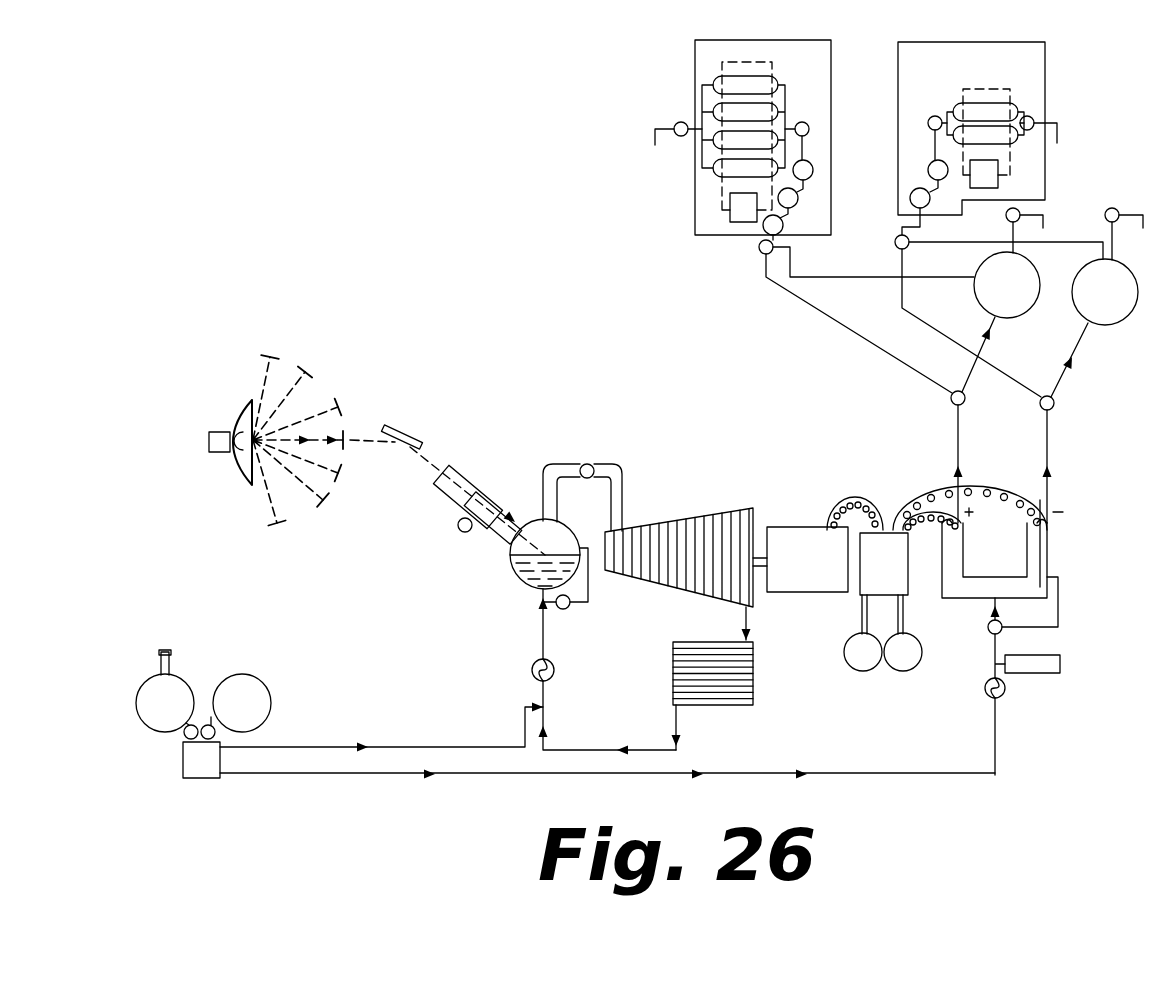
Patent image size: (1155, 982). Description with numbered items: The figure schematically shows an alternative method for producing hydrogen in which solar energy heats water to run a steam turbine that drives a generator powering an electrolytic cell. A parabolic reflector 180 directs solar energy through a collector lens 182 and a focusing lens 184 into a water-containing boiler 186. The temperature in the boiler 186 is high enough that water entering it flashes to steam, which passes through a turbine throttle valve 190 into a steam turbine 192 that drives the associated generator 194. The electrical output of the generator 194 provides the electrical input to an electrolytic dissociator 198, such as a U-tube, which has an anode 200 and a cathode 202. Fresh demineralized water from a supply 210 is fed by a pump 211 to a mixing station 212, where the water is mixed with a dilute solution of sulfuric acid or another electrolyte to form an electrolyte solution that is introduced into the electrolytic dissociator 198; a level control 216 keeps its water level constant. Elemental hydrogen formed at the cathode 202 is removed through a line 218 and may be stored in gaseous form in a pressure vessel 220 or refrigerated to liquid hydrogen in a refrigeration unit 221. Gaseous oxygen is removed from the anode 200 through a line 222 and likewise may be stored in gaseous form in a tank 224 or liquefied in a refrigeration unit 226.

The parabolic reflector 180 is at (242, 402).
The collector lens 182 is at (458, 478).
The focusing lens 184 is at (489, 499).
The boiler 186 is at (511, 572).
The turbine throttle valve 190 is at (588, 464).
The steam turbine 192 is at (697, 513).
The generator 194 is at (824, 566).
The electrolytic dissociator 198 is at (958, 600).
The anode 200 is at (970, 550).
The cathode 202 is at (1050, 548).
The supply 210 is at (212, 766).
The pump 211 is at (985, 694).
The mixing station 212 is at (1048, 676).
The level control 216 is at (988, 640).
The line 218 is at (1050, 434).
The pressure vessel 220 is at (1120, 303).
The refrigeration unit 221 is at (1045, 62).
The line 222 is at (955, 430).
The tank 224 is at (1022, 296).
The refrigeration unit 226 is at (695, 55).